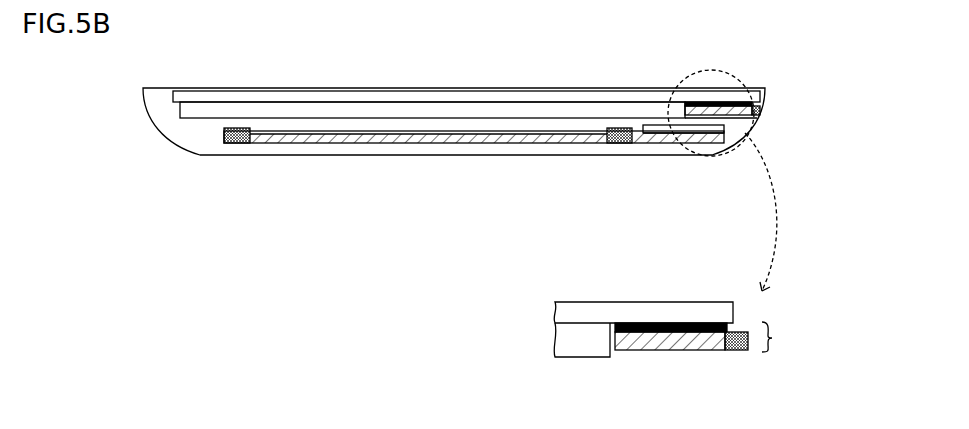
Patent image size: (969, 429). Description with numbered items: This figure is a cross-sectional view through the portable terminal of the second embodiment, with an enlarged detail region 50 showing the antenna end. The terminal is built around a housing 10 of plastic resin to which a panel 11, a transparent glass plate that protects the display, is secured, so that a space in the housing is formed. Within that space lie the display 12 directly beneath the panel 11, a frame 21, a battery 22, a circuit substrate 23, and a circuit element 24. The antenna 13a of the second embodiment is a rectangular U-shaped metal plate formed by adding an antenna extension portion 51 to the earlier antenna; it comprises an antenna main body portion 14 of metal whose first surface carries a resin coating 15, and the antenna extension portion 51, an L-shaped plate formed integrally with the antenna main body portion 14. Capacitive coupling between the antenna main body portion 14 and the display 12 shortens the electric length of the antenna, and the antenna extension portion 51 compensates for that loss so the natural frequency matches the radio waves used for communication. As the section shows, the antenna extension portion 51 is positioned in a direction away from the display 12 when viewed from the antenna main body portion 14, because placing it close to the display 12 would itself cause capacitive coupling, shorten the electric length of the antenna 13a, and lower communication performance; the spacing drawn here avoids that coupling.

The housing 10 is at (212, 156).
The panel 11 is at (491, 92).
The display 12 is at (554, 104).
The antenna 13a is at (793, 337).
The antenna main body portion 14 is at (690, 351).
The coating 15 is at (692, 320).
The frame 21 is at (242, 144).
The battery 22 is at (452, 144).
The circuit substrate 23 is at (694, 144).
The circuit element 24 is at (683, 144).
The enlarged region 50 is at (748, 73).
The antenna extension portion 51 is at (737, 351).